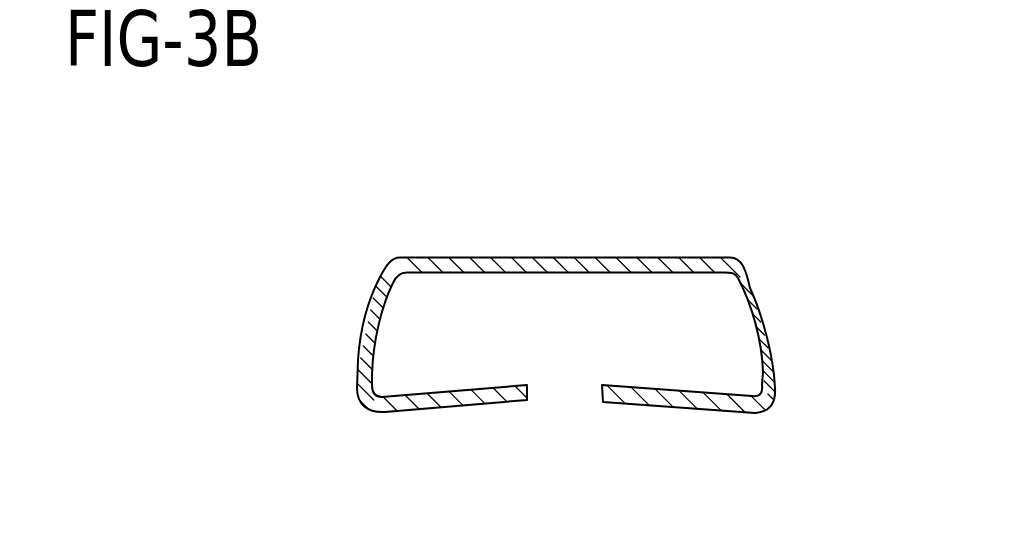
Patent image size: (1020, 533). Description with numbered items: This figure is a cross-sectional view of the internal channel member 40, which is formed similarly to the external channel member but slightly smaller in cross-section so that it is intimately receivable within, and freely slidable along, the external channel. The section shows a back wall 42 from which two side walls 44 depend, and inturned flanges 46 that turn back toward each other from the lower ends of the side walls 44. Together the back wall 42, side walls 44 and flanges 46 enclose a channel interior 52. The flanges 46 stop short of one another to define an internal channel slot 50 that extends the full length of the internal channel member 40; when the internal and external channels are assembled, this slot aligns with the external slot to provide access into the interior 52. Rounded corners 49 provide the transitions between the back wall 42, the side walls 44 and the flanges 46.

The internal channel member 40 is at (335, 263).
The back wall 42 is at (507, 256).
The side walls 44 is at (362, 323).
The inturned flanges 46 is at (468, 405).
The rounded corners 49 is at (393, 258).
The internal channel slot 50 is at (555, 378).
The channel interior 52 is at (605, 320).